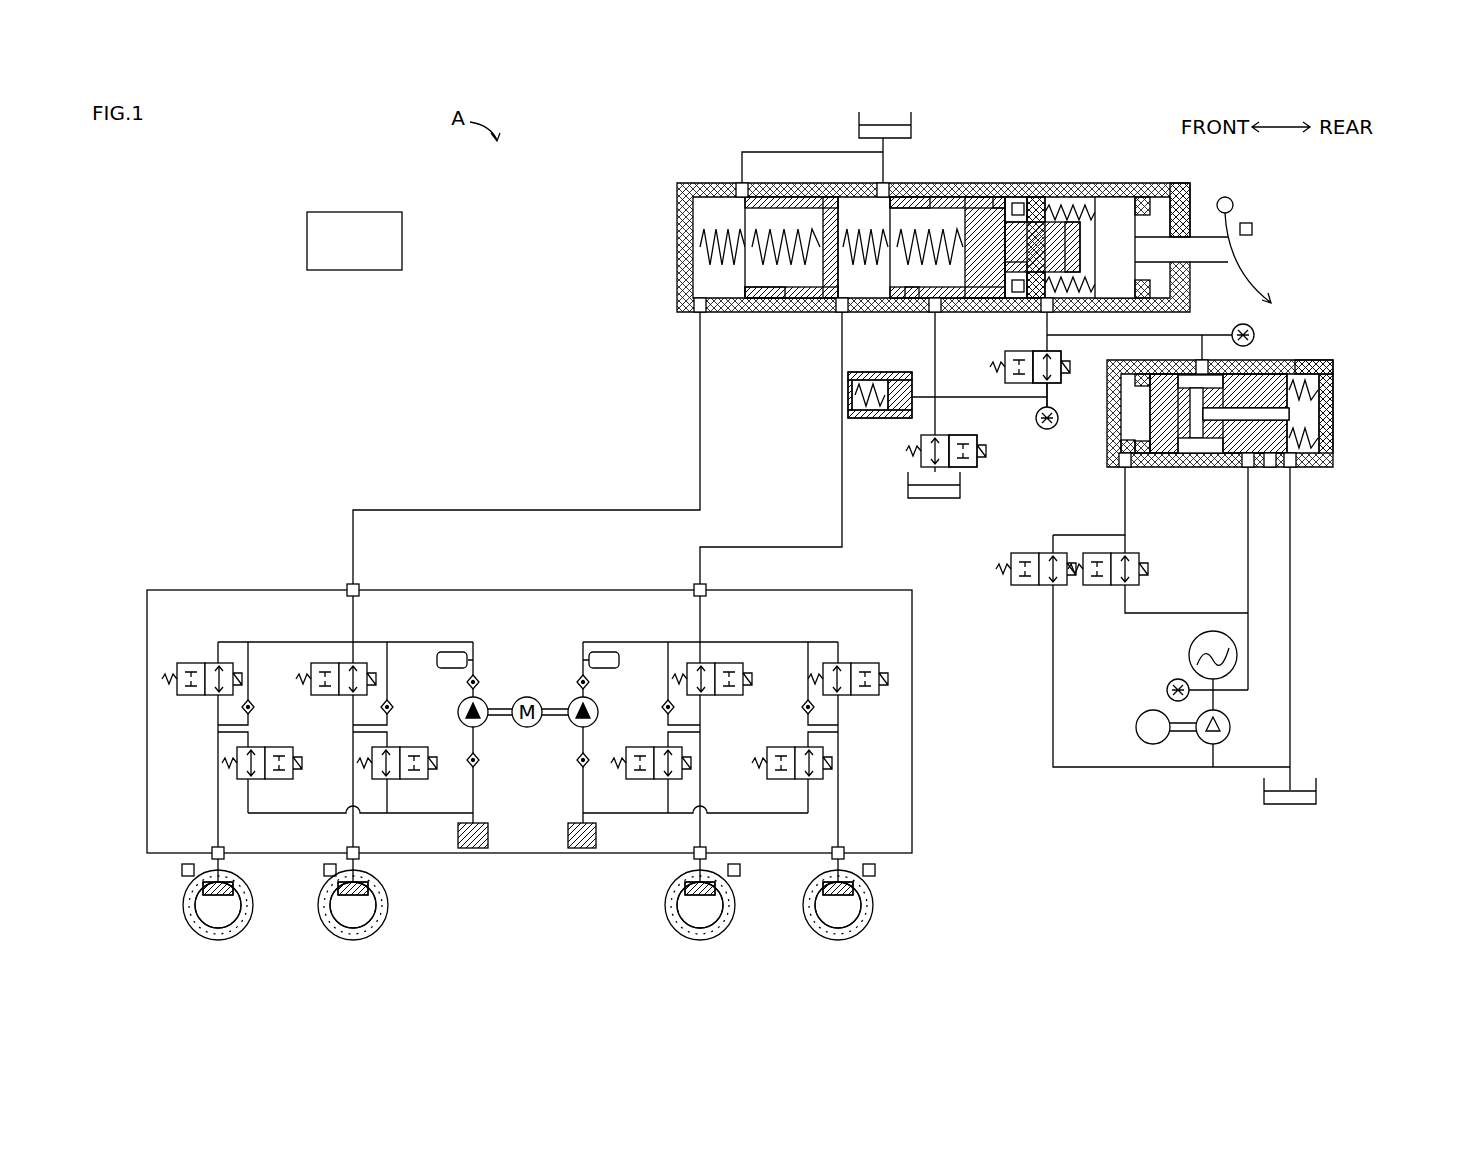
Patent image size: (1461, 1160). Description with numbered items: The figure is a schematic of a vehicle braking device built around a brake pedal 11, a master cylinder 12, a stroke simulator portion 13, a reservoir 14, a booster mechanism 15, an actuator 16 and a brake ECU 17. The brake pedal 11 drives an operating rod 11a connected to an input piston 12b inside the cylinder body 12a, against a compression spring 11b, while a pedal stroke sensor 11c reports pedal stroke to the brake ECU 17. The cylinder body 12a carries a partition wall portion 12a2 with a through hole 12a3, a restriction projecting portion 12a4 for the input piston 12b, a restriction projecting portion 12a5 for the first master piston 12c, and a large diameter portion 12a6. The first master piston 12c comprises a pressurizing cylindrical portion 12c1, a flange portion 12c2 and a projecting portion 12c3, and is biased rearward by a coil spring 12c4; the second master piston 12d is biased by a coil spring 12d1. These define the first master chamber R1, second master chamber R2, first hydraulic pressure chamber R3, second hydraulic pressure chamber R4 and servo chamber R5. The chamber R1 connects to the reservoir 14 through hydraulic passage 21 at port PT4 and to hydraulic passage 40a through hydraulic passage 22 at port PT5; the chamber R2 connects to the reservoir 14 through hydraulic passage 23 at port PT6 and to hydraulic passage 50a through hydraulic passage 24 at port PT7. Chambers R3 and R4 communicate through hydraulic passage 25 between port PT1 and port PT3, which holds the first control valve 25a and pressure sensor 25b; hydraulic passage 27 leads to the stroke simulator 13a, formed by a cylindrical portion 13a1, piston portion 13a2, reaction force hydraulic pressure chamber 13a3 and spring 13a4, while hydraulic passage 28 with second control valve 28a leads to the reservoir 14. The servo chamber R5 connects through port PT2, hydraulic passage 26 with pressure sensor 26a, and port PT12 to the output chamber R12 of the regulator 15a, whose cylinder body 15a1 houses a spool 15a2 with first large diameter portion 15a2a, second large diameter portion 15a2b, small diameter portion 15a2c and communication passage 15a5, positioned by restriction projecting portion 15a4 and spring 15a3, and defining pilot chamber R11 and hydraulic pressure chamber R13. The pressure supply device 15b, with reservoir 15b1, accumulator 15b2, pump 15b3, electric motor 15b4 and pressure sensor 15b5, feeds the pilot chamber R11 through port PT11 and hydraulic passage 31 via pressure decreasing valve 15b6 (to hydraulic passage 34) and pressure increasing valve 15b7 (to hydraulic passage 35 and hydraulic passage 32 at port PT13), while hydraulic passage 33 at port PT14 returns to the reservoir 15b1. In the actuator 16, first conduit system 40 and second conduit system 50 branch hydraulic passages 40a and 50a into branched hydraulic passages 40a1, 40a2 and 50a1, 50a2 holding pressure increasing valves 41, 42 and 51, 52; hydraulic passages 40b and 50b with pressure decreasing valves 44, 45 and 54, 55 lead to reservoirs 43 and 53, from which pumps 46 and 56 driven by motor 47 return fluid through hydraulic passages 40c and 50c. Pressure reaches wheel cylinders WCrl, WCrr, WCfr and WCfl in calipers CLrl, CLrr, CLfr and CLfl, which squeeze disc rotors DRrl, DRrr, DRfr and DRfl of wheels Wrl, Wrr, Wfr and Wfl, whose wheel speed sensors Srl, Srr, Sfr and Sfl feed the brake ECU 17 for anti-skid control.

The brake pedal 11 is at (1240, 280).
The operating rod 11a is at (1235, 250).
The compression spring 11b is at (1070, 204).
The pedal stroke sensor 11c is at (1254, 229).
The master cylinder 12 is at (640, 180).
The cylinder body 12a is at (676, 232).
The partition wall portion 12a2 is at (1032, 198).
The through hole 12a3 is at (1040, 200).
The restriction projecting portion 12a4 is at (1160, 196).
The restriction projecting portion 12a5 is at (1016, 203).
The large diameter portion 12a6 is at (1010, 282).
The input piston 12b is at (1120, 205).
The first master piston 12c is at (910, 300).
The pressurizing cylindrical portion 12c1 is at (928, 196).
The flange portion 12c2 is at (1000, 198).
The projecting portion 12c3 is at (1078, 222).
The coil spring 12c4 is at (910, 300).
The second master piston 12d is at (790, 265).
The coil spring 12d1 is at (765, 300).
The stroke simulator portion 13 is at (938, 278).
The stroke simulator 13a is at (884, 430).
The cylindrical portion 13a1 is at (850, 408).
The piston portion 13a2 is at (850, 416).
The reaction force hydraulic pressure chamber 13a3 is at (850, 377).
The spring 13a4 is at (855, 392).
The reservoir 14 is at (858, 124).
The booster mechanism 15 is at (1424, 548).
The regulator 15a is at (1370, 416).
The cylinder body 15a1 is at (1340, 432).
The spool 15a2 is at (1335, 392).
The first large diameter portion 15a2a is at (1278, 468).
The second large diameter portion 15a2b is at (1165, 468).
The small diameter portion 15a2c is at (1252, 468).
The spring 15a3 is at (1322, 366).
The restriction projecting portion 15a4 is at (1128, 470).
The communication passage 15a5 is at (1338, 412).
The pressure supply device 15b is at (1350, 638).
The reservoir 15b1 is at (1316, 792).
The accumulator 15b2 is at (1190, 660).
The pump 15b3 is at (1230, 728).
The electric motor 15b4 is at (1136, 727).
The pressure sensor 15b5 is at (1166, 690).
The pressure decreasing valve 15b6 is at (1048, 592).
The pressure increasing valve 15b7 is at (1118, 592).
The actuator 16 is at (835, 590).
The brake ECU 17 is at (360, 212).
The hydraulic passage 21 is at (880, 152).
The hydraulic passage 22 is at (765, 547).
The hydraulic passage 23 is at (770, 152).
The hydraulic passage 24 is at (505, 510).
The hydraulic passage 25 is at (1036, 418).
The first control valve 25a is at (1062, 372).
The pressure sensor 25b is at (1058, 410).
The hydraulic passage 26 is at (1200, 335).
The pressure sensor 26a is at (1255, 335).
The hydraulic passage 27 is at (925, 410).
The hydraulic passage 28 is at (950, 440).
The second control valve 28a is at (974, 458).
The hydraulic passage 31 is at (1114, 535).
The hydraulic passage 32 is at (1250, 600).
The hydraulic passage 33 is at (1292, 700).
The hydraulic passage 34 is at (1052, 662).
The hydraulic passage 35 is at (1180, 613).
The first conduit system 40 is at (807, 622).
The hydraulic passage 40a is at (704, 632).
The branched hydraulic passage 40a1 is at (704, 732).
The branched hydraulic passage 40a2 is at (840, 735).
The hydraulic passage 40b is at (735, 812).
The hydraulic passage 40c is at (586, 752).
The first pressure increasing control valve 41 is at (745, 675).
The second pressure increasing valve 42 is at (853, 663).
The reservoir 43 is at (583, 850).
The first pressure decreasing control valve 44 is at (652, 747).
The first pressure decreasing control valve 45 is at (795, 747).
The pump 46 is at (592, 705).
The motor 47 is at (528, 697).
The second conduit system 50 is at (220, 622).
The hydraulic passage 50a is at (351, 628).
The branched hydraulic passage 50a1 is at (350, 730).
The branched hydraulic passage 50a2 is at (216, 740).
The hydraulic passage 50b is at (320, 812).
The hydraulic passage 50c is at (472, 752).
The first pressure increasing control valve 51 is at (318, 672).
The second pressure increasing valve 52 is at (210, 663).
The reservoir 53 is at (472, 850).
The second pressure decreasing control valve 54 is at (400, 747).
The second pressure decreasing control valve 55 is at (262, 747).
The pump 56 is at (463, 705).
The first master chamber R1 is at (865, 298).
The second master chamber R2 is at (722, 300).
The first hydraulic pressure chamber R3 is at (1150, 298).
The second hydraulic pressure chamber R4 is at (1010, 290).
The servo chamber R5 is at (1012, 310).
The pilot chamber R11 is at (1122, 438).
The output chamber R12 is at (1246, 470).
The hydraulic pressure chamber R13 is at (1334, 444).
The port PT1 is at (1050, 312).
The port PT2 is at (1010, 368).
The port PT3 is at (935, 312).
The port PT4 is at (880, 183).
The port PT5 is at (842, 312).
The port PT6 is at (740, 183).
The port PT7 is at (700, 312).
The port PT11 is at (1122, 470).
The port PT12 is at (1200, 357).
The port PT13 is at (1292, 480).
The port PT14 is at (1278, 470).
The left front wheel Wfl is at (195, 932).
The right front wheel Wfr is at (328, 932).
The left rear wheel Wrl is at (725, 932).
The right rear wheel Wrr is at (863, 932).
The wheel speed sensor Sfl is at (182, 870).
The wheel speed sensor Sfr is at (324, 870).
The wheel speed sensor Srl is at (741, 870).
The wheel speed sensor Srr is at (876, 870).
The caliper CLfl is at (203, 888).
The caliper CLfr is at (338, 888).
The caliper CLrl is at (716, 888).
The caliper CLrr is at (854, 888).
The wheel cylinder WCfl is at (195, 902).
The wheel cylinder WCfr is at (330, 902).
The wheel cylinder WCrl is at (724, 902).
The wheel cylinder WCrr is at (862, 902).
The disc rotor DRfl is at (192, 918).
The disc rotor DRfr is at (328, 918).
The disc rotor DRrl is at (727, 918).
The disc rotor DRrr is at (866, 918).